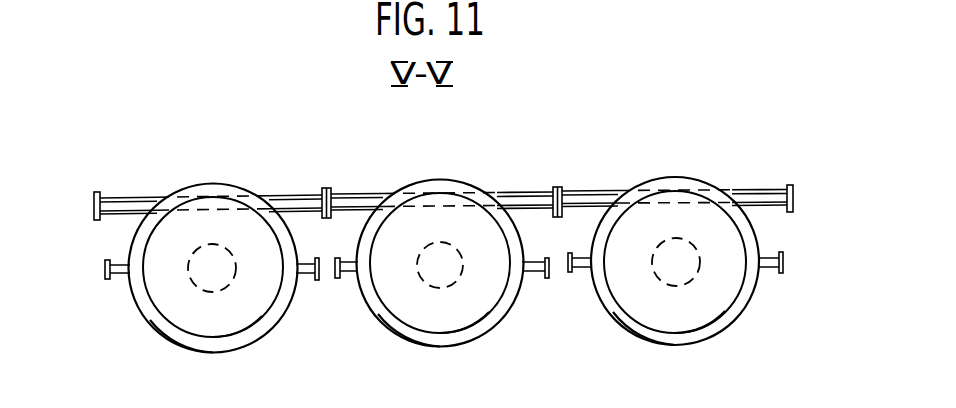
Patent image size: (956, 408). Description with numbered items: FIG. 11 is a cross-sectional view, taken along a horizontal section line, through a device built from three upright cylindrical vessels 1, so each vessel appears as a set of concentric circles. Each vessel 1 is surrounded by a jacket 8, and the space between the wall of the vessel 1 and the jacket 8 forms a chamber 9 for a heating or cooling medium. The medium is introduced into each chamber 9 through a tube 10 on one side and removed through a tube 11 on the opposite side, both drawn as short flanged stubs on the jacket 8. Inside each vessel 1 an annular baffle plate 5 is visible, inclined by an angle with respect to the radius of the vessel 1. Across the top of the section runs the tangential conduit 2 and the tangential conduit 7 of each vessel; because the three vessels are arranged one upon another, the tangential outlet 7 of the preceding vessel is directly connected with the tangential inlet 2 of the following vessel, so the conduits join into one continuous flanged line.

The cylindrical vessel 1 is at (207, 338).
The tangential inlet conduit 2 is at (128, 197).
The annular baffle plate 5 is at (246, 316).
The tangential outlet conduit 7 is at (283, 197).
The jacket 8 is at (168, 340).
The chamber 9 is at (157, 322).
The inlet tube 10 is at (106, 279).
The outlet tube 11 is at (306, 280).